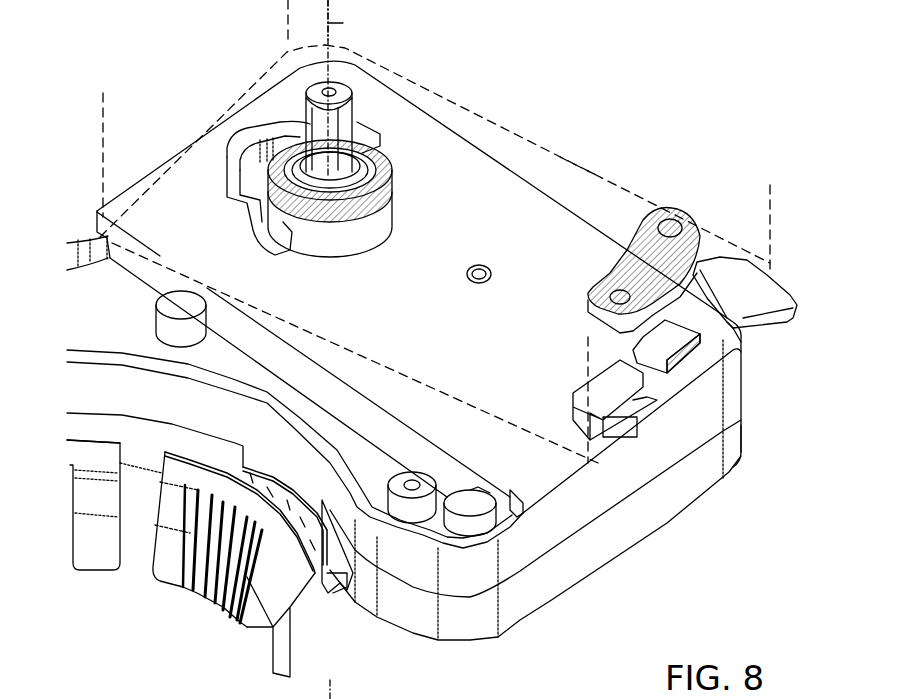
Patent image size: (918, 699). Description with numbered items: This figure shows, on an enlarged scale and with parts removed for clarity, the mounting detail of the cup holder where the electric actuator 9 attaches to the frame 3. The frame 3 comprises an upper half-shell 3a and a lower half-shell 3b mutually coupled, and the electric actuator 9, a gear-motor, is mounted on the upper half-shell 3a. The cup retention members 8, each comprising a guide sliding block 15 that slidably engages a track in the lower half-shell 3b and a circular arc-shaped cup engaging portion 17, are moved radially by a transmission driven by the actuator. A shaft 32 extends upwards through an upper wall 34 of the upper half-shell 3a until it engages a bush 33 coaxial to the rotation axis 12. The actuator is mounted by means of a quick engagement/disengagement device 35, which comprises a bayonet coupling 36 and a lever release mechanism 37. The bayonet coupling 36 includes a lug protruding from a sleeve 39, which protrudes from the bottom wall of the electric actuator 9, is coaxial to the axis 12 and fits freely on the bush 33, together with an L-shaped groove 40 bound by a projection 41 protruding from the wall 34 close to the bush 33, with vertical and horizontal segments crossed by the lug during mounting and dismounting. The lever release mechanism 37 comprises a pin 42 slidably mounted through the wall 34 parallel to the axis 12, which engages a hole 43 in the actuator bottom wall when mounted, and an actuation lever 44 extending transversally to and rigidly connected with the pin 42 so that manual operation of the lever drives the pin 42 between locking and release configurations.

The frame 3 is at (444, 350).
The upper half-shell 3a is at (535, 508).
The lower half-shell 3b is at (685, 511).
The cup retention members 8 is at (212, 545).
The electric actuator 9 is at (596, 145).
The rotation axis 12 is at (358, 349).
The guide sliding block 15 is at (180, 539).
The cup engaging portion 17 is at (227, 585).
The shaft 32 is at (371, 87).
The bush 33 is at (366, 143).
The upper wall 34 is at (355, 281).
The quick engagement/disengagement device 35 is at (547, 160).
The bayonet coupling 36 is at (212, 118).
The lever release mechanism 37 is at (780, 349).
The sleeve 39 is at (356, 203).
The L-shaped groove 40 is at (260, 136).
The projection 41 is at (201, 198).
The pin 42 is at (611, 273).
The hole 43 is at (677, 188).
The actuation lever 44 is at (756, 276).